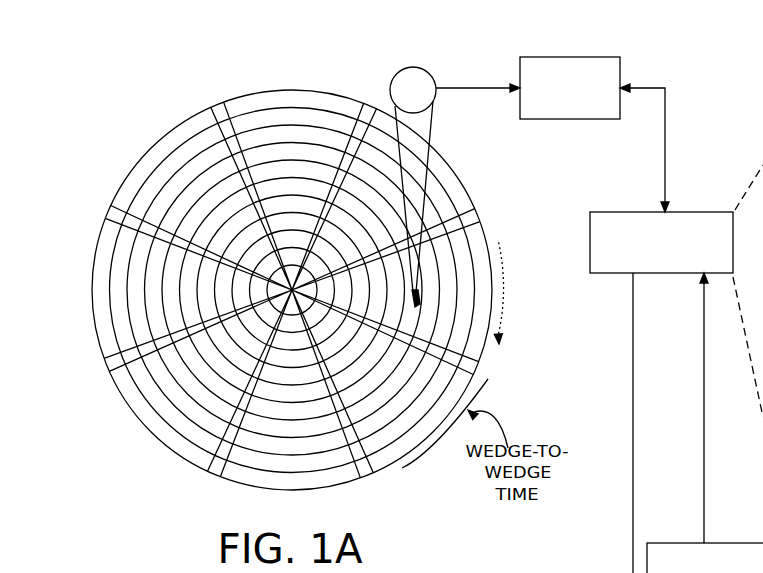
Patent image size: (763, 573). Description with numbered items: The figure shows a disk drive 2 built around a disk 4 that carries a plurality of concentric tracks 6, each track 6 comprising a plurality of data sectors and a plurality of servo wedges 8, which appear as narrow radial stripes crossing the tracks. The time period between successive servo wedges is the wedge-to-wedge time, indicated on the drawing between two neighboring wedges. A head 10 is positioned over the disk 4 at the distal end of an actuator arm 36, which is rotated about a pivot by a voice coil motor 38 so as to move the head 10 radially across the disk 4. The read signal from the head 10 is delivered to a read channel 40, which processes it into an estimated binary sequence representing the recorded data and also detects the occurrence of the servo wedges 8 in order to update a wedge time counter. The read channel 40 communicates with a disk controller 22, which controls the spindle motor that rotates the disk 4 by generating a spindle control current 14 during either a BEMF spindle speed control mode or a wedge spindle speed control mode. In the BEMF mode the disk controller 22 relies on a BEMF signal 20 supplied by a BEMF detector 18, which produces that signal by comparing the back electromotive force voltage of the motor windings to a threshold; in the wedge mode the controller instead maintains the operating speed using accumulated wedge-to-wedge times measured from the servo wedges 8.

The disk drive 2 is at (125, 96).
The disk 4 is at (131, 149).
The tracks 6 is at (292, 115).
The servo wedges 8 is at (219, 105).
The head 10 is at (420, 306).
The spindle control current 14 is at (633, 366).
The BEMF detector 18 is at (740, 543).
The BEMF signal 20 is at (704, 424).
The disk controller 22 is at (590, 240).
The actuator arm 36 is at (432, 127).
The voice coil motor 38 is at (413, 67).
The read channel 40 is at (569, 120).